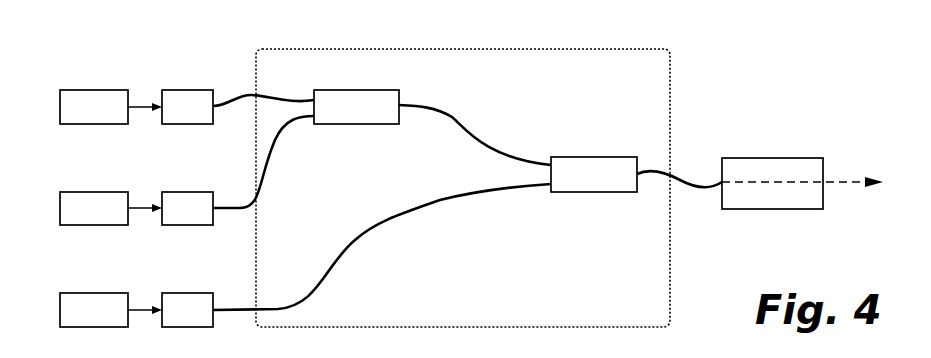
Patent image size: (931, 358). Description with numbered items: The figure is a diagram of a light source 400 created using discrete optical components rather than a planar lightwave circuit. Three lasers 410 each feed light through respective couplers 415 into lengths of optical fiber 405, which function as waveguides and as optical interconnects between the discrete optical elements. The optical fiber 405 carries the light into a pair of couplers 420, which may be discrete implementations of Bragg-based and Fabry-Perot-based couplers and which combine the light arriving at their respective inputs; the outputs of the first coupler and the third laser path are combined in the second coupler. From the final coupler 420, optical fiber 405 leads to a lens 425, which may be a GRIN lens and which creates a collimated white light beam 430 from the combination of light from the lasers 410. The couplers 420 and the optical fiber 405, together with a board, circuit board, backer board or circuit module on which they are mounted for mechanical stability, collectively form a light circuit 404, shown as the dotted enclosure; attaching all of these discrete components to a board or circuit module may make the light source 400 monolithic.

The light source 400 is at (796, 34).
The light circuit 404 is at (417, 49).
The optical fiber 405 is at (452, 114).
The lasers 410 is at (93, 90).
The couplers 415 is at (188, 90).
The couplers 420 is at (358, 90).
The lens 425 is at (772, 158).
The collimated white light beam 430 is at (838, 182).